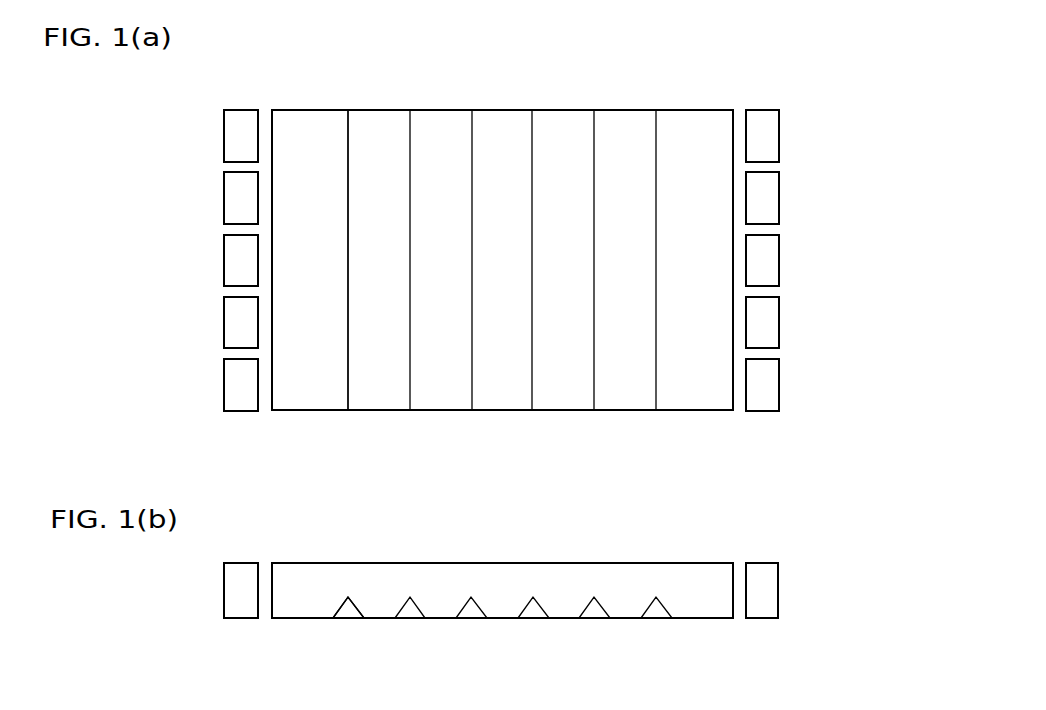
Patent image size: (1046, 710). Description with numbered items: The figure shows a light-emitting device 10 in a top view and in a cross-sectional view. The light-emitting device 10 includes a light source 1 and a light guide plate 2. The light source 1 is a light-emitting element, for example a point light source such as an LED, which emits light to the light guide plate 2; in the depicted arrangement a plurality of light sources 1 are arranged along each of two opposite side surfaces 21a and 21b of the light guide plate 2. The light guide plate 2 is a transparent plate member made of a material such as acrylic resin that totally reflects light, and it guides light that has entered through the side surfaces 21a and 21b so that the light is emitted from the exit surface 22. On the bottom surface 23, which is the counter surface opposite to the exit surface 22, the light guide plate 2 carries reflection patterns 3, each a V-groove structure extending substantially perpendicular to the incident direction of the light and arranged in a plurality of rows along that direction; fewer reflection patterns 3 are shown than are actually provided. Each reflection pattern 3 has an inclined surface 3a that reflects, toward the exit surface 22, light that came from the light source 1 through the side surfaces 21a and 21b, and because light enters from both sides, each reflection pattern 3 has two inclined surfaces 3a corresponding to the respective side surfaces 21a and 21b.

In FIG. 1A, the light-emitting device 10 is at (826, 68).
In FIG. 1A, the light source 1 is at (232, 262).
In FIG. 1B, the light source 1 is at (232, 588).
In FIG. 1A, the light guide plate 2 is at (614, 110).
In FIG. 1B, the light guide plate 2 is at (603, 562).
In FIG. 1A, the reflection pattern 3 is at (348, 400).
In FIG. 1B, the reflection pattern 3 is at (348, 620).
In FIG. 1B, the inclined surface 3a is at (336, 611).
In FIG. 1A, the exit surface 22 is at (492, 125).
In FIG. 1B, the exit surface 22 is at (472, 562).
In FIG. 1B, the bottom surface 23 is at (683, 618).
In FIG. 1B, the side surface 21a is at (270, 605).
In FIG. 1B, the side surface 21b is at (735, 605).